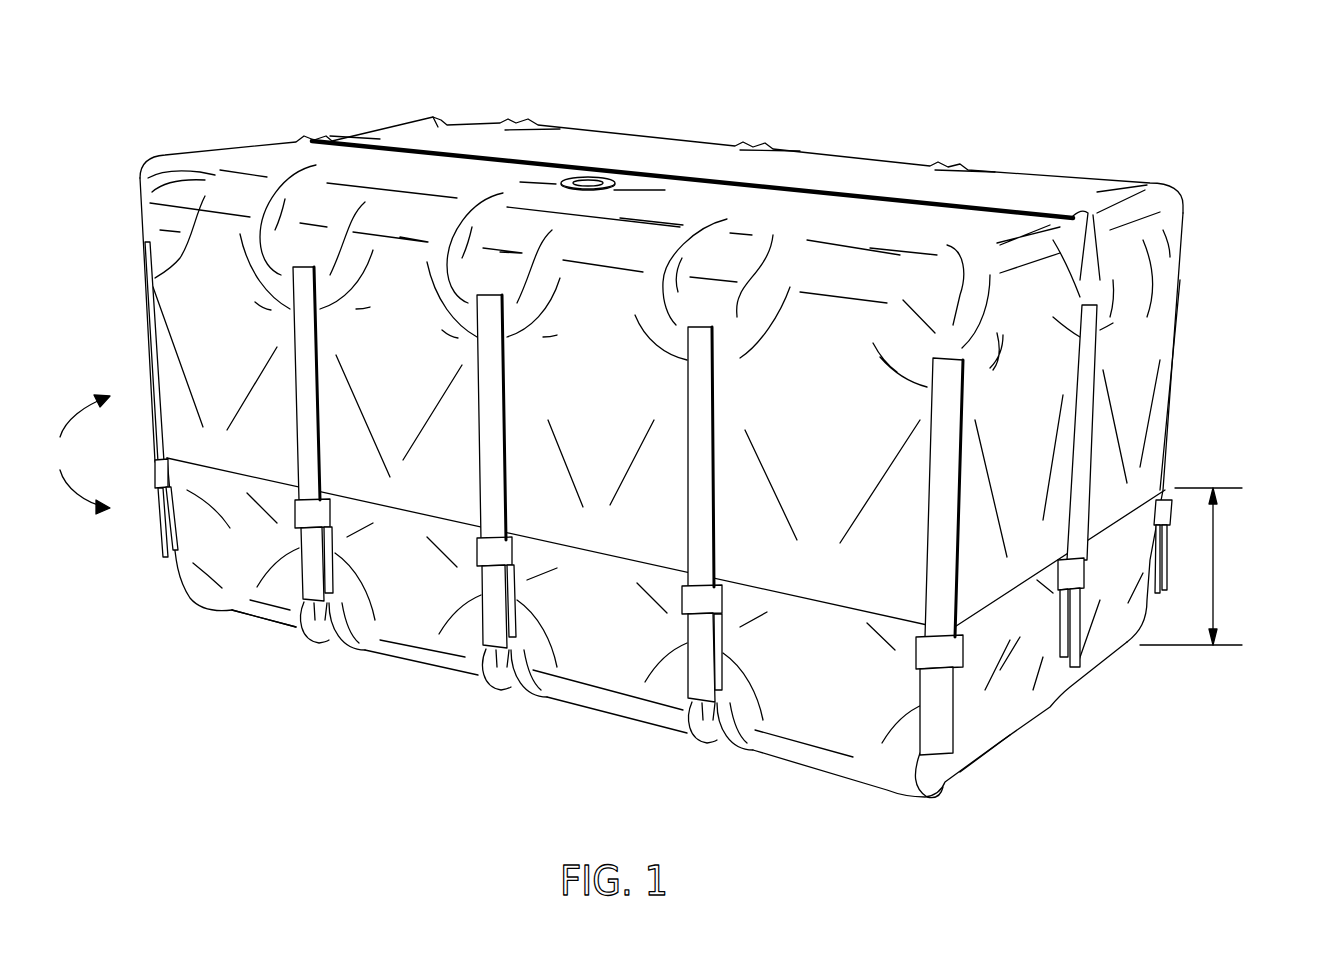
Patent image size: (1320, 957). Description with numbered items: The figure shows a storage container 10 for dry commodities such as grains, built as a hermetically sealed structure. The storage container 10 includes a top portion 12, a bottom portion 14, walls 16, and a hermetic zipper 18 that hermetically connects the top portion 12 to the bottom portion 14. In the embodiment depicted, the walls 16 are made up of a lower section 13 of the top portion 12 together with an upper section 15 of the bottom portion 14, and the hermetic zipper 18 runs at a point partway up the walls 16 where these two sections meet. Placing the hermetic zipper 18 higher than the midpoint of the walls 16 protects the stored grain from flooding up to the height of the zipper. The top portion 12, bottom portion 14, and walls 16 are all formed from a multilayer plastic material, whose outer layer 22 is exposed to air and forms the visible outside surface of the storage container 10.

The storage container 10 is at (668, 427).
The top portion 12 is at (661, 210).
The lower section 13 is at (1183, 240).
The bottom portion 14 is at (265, 620).
The upper section 15 is at (1018, 722).
The walls 16 is at (76, 454).
The hermetic zipper 18 is at (803, 600).
The outer layer 22 is at (145, 232).